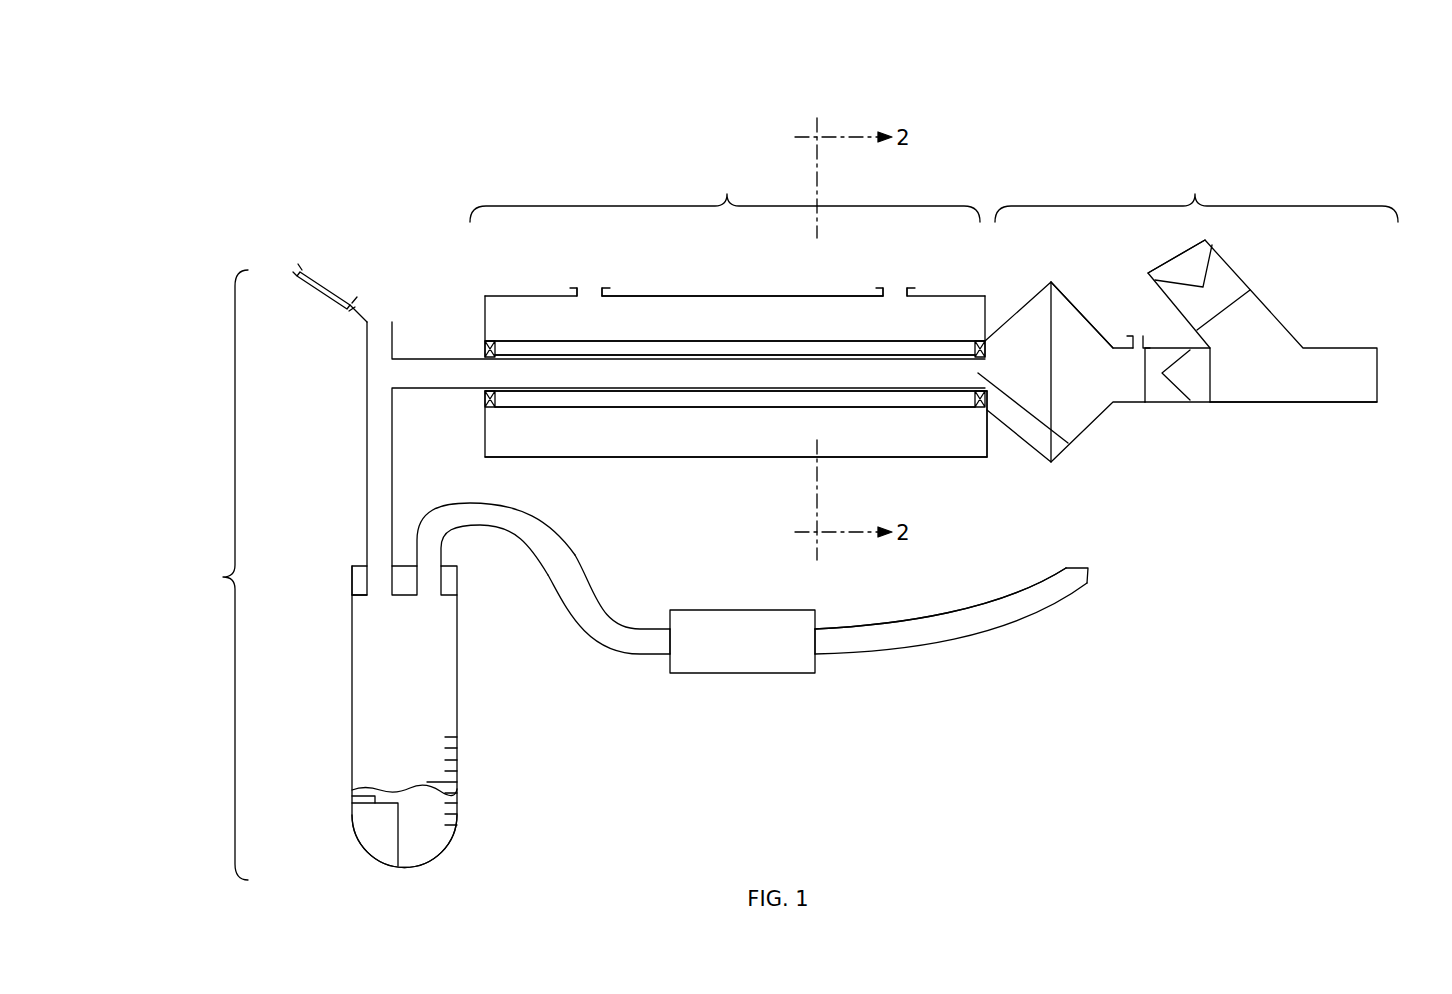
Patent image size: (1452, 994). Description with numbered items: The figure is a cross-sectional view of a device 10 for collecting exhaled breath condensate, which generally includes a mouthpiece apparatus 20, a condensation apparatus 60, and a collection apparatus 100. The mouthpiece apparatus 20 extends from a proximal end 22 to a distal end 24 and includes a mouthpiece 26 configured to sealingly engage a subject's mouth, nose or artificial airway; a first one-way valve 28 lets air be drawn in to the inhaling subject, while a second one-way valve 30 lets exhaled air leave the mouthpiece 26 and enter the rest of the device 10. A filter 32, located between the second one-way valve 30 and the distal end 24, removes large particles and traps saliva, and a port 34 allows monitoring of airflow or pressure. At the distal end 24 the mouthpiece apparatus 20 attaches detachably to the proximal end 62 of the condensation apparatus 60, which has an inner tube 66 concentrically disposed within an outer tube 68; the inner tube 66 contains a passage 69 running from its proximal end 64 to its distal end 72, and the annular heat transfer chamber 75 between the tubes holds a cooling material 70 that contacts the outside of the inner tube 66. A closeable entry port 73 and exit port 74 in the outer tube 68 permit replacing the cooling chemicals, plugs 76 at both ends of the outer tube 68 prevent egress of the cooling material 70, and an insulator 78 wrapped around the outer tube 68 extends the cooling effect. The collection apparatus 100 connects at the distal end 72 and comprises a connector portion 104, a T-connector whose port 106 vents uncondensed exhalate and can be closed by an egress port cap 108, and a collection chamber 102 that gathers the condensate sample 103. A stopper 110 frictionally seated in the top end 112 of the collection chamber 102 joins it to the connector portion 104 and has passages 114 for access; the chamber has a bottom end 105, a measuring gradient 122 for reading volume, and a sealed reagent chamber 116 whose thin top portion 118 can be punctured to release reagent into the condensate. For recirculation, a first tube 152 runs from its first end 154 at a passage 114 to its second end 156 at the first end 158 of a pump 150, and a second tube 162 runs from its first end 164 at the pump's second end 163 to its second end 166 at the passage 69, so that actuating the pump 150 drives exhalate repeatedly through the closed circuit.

The device 10 is at (1118, 105).
The mouthpiece apparatus 20 is at (1196, 194).
The proximal end 22 is at (1378, 348).
The distal end 24 is at (1013, 310).
The mouthpiece 26 is at (1300, 402).
The first one-way valve 28 is at (1232, 268).
The second one-way valve 30 is at (1175, 402).
The filter 32 is at (1060, 290).
The port 34 is at (1138, 334).
The condensation apparatus 60 is at (725, 193).
The proximal end 62 is at (987, 410).
The proximal end 64 is at (980, 457).
The inner tube 66 is at (660, 359).
The outer tube 68 is at (733, 341).
The passage 69 is at (1068, 443).
The cooling material 70 is at (862, 395).
The distal end 72 is at (487, 457).
The entry port 73 is at (895, 290).
The exit port 74 is at (590, 290).
The heat transfer chamber 75 is at (545, 359).
The plugs 76 is at (488, 345).
The insulator 78 is at (788, 300).
The collection apparatus 100 is at (214, 575).
The collection chamber 102 is at (352, 690).
The condensate sample 103 is at (360, 790).
The connector portion 104 is at (367, 375).
The bottom end 105 is at (445, 850).
The port 106 is at (382, 322).
The egress port cap 108 is at (322, 300).
The stopper 110 is at (352, 570).
The top end 112 is at (352, 600).
The passages 114 is at (378, 590).
The reagent chamber 116 is at (378, 845).
The top portion 118 is at (352, 797).
The measuring gradient 122 is at (468, 723).
The pump 150 is at (742, 610).
The first tube 152 is at (548, 560).
The first end 154 is at (468, 503).
The second end 156 is at (592, 585).
The first end 158 is at (670, 673).
The second tube 162 is at (1012, 640).
The second end 163 is at (815, 673).
The first end 164 is at (850, 629).
The second end 166 is at (1090, 570).